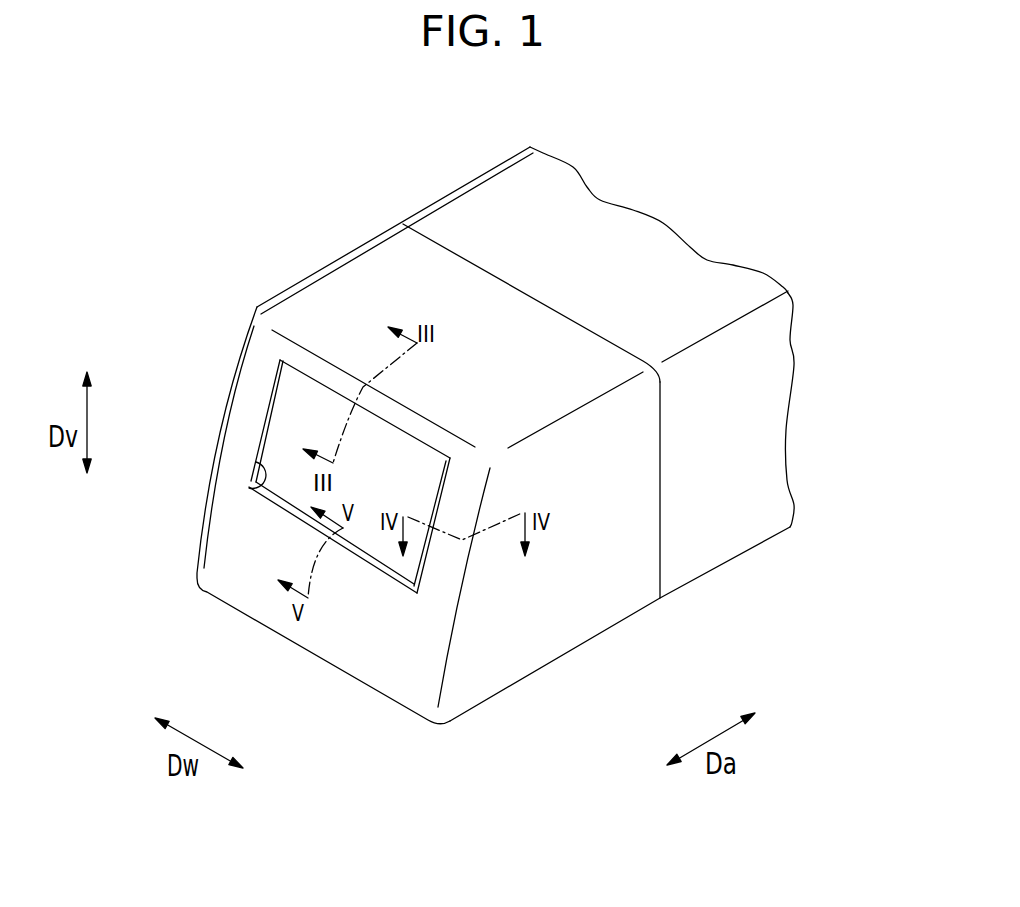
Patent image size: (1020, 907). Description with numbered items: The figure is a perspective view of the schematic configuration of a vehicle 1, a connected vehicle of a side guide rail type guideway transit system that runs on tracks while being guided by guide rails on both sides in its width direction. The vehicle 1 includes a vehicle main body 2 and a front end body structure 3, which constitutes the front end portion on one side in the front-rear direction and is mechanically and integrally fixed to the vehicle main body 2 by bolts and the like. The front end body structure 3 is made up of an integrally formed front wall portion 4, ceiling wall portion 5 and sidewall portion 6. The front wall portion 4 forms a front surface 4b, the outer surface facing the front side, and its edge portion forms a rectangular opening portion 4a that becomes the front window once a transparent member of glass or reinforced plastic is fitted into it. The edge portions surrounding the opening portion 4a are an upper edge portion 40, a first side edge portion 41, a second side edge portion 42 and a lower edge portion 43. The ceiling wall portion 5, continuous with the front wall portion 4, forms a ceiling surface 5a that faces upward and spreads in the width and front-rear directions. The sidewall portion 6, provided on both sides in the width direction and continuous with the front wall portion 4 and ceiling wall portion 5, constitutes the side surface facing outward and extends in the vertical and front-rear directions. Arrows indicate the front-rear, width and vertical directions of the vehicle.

The vehicle 1 is at (672, 177).
The vehicle main body 2 is at (755, 553).
The front end body structure 3 is at (625, 627).
The front wall portion 4 is at (365, 657).
The opening portion 4a is at (253, 488).
The front surface 4b is at (422, 647).
The ceiling wall portion 5 is at (373, 258).
The ceiling surface 5a is at (320, 297).
The sidewall portion 6 is at (226, 387).
The upper edge portion 40 is at (317, 360).
The first side edge portion 41 is at (450, 563).
The second side edge portion 42 is at (237, 440).
The lower edge portion 43 is at (280, 522).